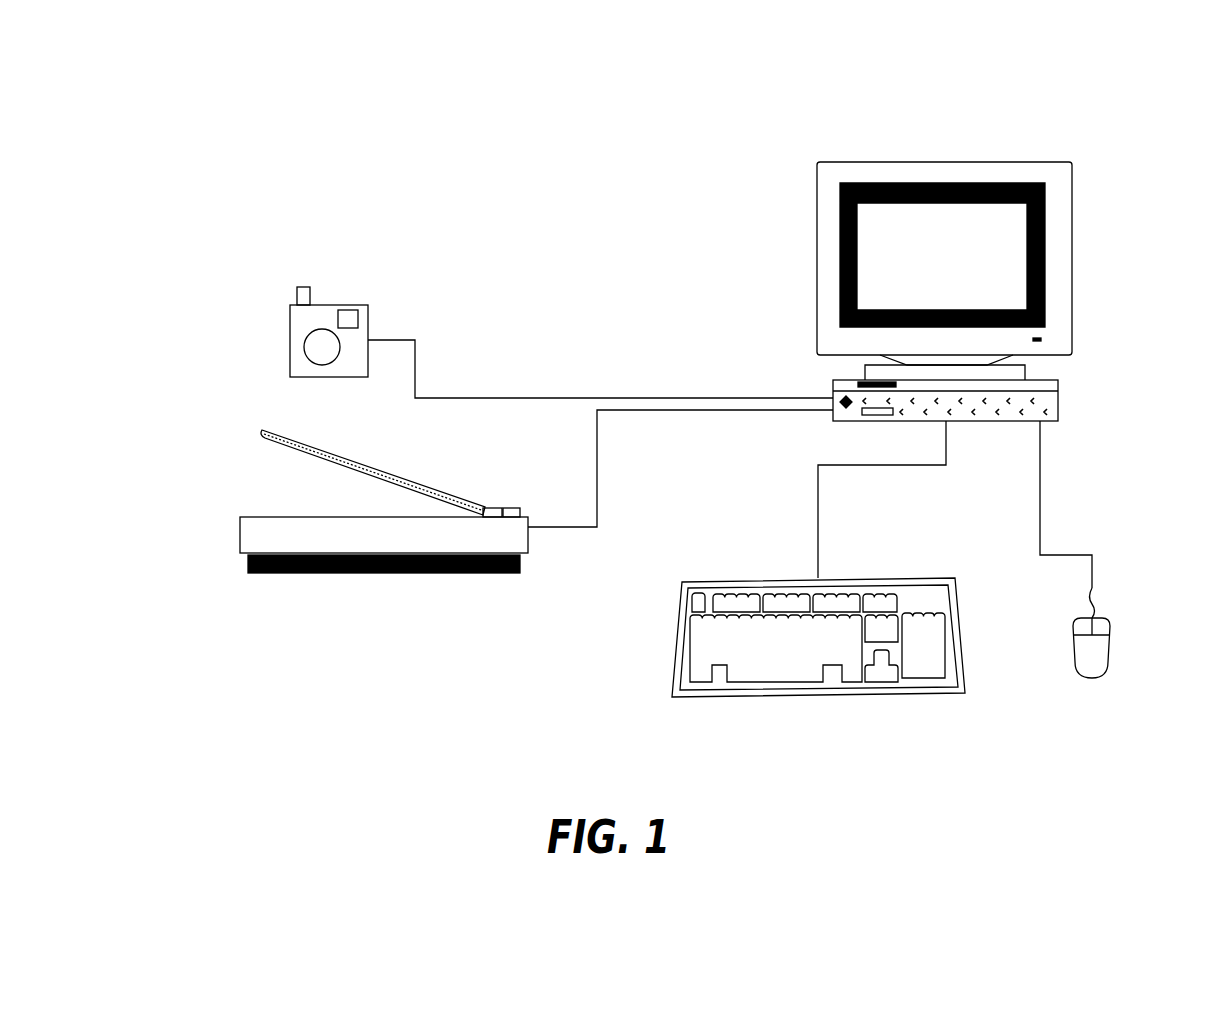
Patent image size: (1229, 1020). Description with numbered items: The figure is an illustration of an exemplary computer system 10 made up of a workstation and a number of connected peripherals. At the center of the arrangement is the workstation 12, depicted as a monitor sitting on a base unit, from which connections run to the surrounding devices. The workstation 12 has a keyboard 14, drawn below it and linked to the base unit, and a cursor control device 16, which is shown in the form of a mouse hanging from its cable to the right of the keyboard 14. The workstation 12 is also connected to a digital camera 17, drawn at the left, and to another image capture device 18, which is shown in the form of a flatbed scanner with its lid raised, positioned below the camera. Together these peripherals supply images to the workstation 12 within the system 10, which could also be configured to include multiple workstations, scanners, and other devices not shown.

The computer system 10 is at (617, 137).
The workstation 12 is at (945, 160).
The keyboard 14 is at (818, 697).
The cursor control device 16 is at (1110, 634).
The digital camera 17 is at (290, 340).
The image capture device 18 is at (385, 572).